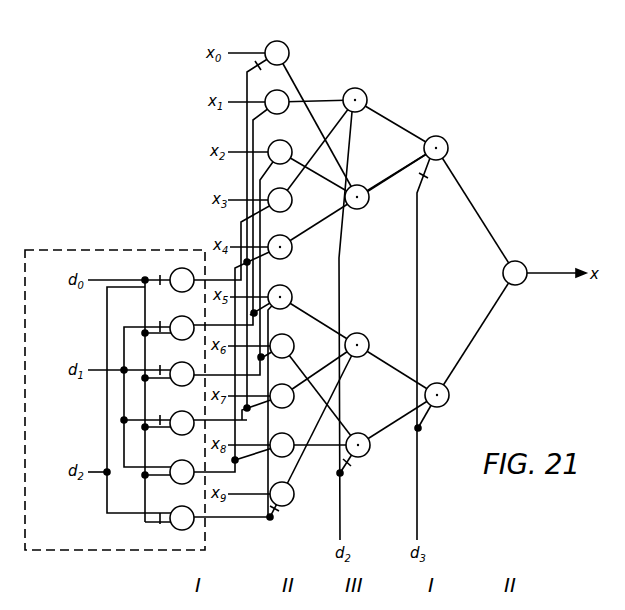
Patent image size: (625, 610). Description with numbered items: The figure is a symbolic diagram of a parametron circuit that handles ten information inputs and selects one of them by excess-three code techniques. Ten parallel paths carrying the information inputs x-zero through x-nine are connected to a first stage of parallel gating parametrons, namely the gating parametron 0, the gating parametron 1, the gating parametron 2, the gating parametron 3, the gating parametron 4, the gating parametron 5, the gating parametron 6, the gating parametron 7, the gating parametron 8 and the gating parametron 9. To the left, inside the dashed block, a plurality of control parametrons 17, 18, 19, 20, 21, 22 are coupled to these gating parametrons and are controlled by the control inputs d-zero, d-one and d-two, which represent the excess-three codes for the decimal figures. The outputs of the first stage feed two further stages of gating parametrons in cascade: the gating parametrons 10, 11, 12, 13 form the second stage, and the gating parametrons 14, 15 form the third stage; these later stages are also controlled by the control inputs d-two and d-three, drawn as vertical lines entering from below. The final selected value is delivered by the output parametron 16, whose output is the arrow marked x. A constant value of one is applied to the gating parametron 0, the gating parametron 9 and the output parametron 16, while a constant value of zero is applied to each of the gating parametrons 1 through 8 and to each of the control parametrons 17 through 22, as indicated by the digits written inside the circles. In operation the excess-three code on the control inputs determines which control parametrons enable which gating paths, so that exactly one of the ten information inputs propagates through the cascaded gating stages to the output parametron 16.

The gating parametron 0 is at (282, 46).
The gating parametron 1 is at (277, 93).
The gating parametron 2 is at (280, 143).
The gating parametron 3 is at (280, 191).
The gating parametron 4 is at (280, 238).
The gating parametron 5 is at (280, 288).
The gating parametron 6 is at (282, 337).
The gating parametron 7 is at (282, 387).
The gating parametron 8 is at (282, 436).
The gating parametron 9 is at (282, 485).
The gating parametron 10 is at (355, 91).
The gating parametron 11 is at (357, 188).
The gating parametron 12 is at (358, 336).
The gating parametron 13 is at (359, 436).
The gating parametron 14 is at (439, 139).
The gating parametron 15 is at (449, 396).
The output parametron 16 is at (521, 264).
The control parametron 17 is at (182, 271).
The control parametron 18 is at (182, 319).
The control parametron 19 is at (182, 365).
The control parametron 20 is at (182, 414).
The control parametron 21 is at (182, 463).
The control parametron 22 is at (182, 509).